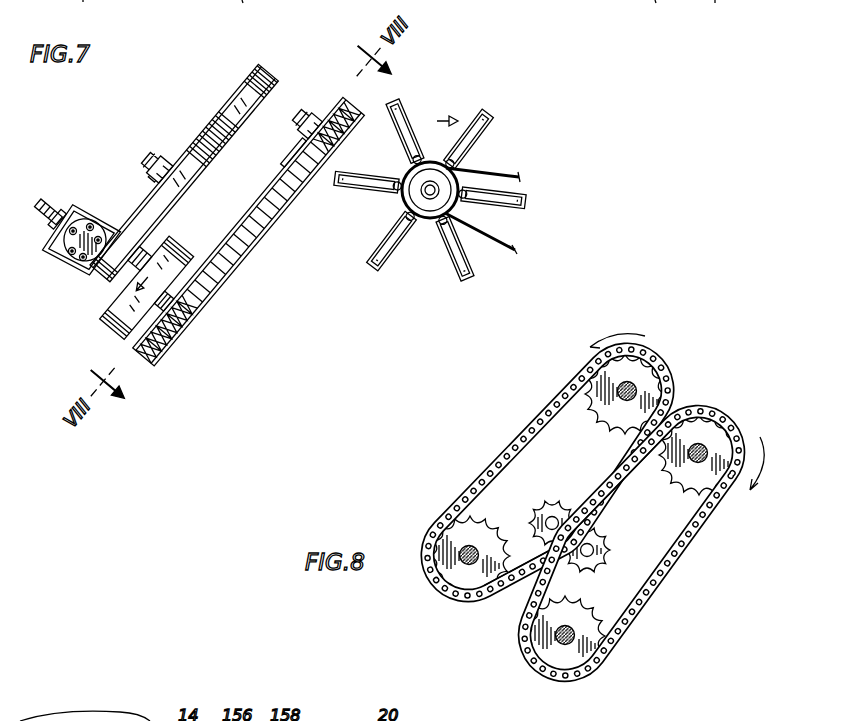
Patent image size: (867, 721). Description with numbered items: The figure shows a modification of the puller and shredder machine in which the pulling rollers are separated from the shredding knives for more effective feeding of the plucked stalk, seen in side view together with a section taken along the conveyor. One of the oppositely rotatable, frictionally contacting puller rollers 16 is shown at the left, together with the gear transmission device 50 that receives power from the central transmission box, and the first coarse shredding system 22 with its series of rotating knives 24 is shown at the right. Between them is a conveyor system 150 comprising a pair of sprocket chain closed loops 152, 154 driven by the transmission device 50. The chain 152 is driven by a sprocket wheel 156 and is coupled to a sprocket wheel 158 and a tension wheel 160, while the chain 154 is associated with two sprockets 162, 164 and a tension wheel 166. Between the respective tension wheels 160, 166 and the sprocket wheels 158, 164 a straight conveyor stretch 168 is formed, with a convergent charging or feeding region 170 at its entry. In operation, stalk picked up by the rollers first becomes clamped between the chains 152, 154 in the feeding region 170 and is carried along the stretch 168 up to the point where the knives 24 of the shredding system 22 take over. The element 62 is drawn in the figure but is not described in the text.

In FIG. 7, the puller roller 16 is at (98, 312).
In FIG. 7, the first coarse shredding system 22 is at (441, 167).
In FIG. 7, the knives 24 is at (488, 117).
In FIG. 7, the gear transmission device 50 is at (84, 203).
In FIG. 7, the guide rail 62 is at (237, 105).
In FIG. 7, the conveyor system 150 is at (239, 224).
In FIG. 8, the conveyor system 150 is at (592, 508).
In FIG. 8, the sprocket chain closed loop 152 is at (547, 490).
In FIG. 7, the sprocket chain closed loop 154 is at (270, 223).
In FIG. 8, the sprocket chain closed loop 154 is at (642, 543).
In FIG. 8, the sprocket wheel 156 is at (453, 580).
In FIG. 8, the sprocket wheel 158 is at (643, 373).
In FIG. 8, the tension wheel 160 is at (558, 500).
In FIG. 8, the sprocket 162 is at (582, 663).
In FIG. 8, the sprocket 164 is at (717, 430).
In FIG. 8, the tension wheel 166 is at (602, 562).
In FIG. 8, the straight conveyor stretch 168 is at (622, 494).
In FIG. 8, the convergent charging region 170 is at (516, 598).